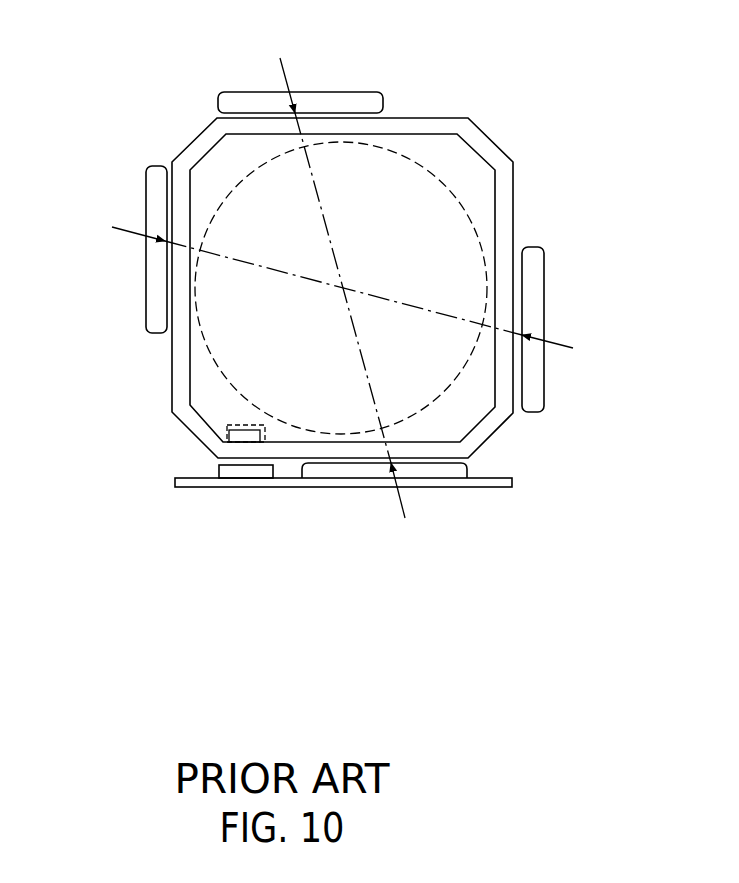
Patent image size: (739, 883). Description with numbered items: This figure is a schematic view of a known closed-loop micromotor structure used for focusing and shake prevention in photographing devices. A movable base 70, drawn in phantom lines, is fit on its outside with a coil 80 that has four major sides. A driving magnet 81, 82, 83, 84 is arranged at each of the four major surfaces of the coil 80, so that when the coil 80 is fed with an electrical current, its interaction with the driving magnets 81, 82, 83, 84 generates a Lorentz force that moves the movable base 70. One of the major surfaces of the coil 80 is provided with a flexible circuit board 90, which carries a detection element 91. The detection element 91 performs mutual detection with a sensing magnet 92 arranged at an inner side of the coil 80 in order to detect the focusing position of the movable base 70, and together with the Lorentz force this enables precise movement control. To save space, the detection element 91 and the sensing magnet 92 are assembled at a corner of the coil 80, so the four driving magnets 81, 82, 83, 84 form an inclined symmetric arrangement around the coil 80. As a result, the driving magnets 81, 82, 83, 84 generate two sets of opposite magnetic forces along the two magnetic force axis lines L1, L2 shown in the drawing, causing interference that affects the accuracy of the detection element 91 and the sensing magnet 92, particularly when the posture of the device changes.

The movable base 70 is at (440, 177).
The coil 80 is at (519, 194).
The driving magnet 81 is at (528, 368).
The driving magnet 82 is at (240, 102).
The driving magnet 83 is at (157, 297).
The driving magnet 84 is at (437, 482).
The flexible circuit board 90 is at (487, 482).
The detection element 91 is at (246, 470).
The sensing magnet 92 is at (233, 436).
The magnetic force axis line L1 is at (340, 270).
The magnetic force axis line L2 is at (333, 272).